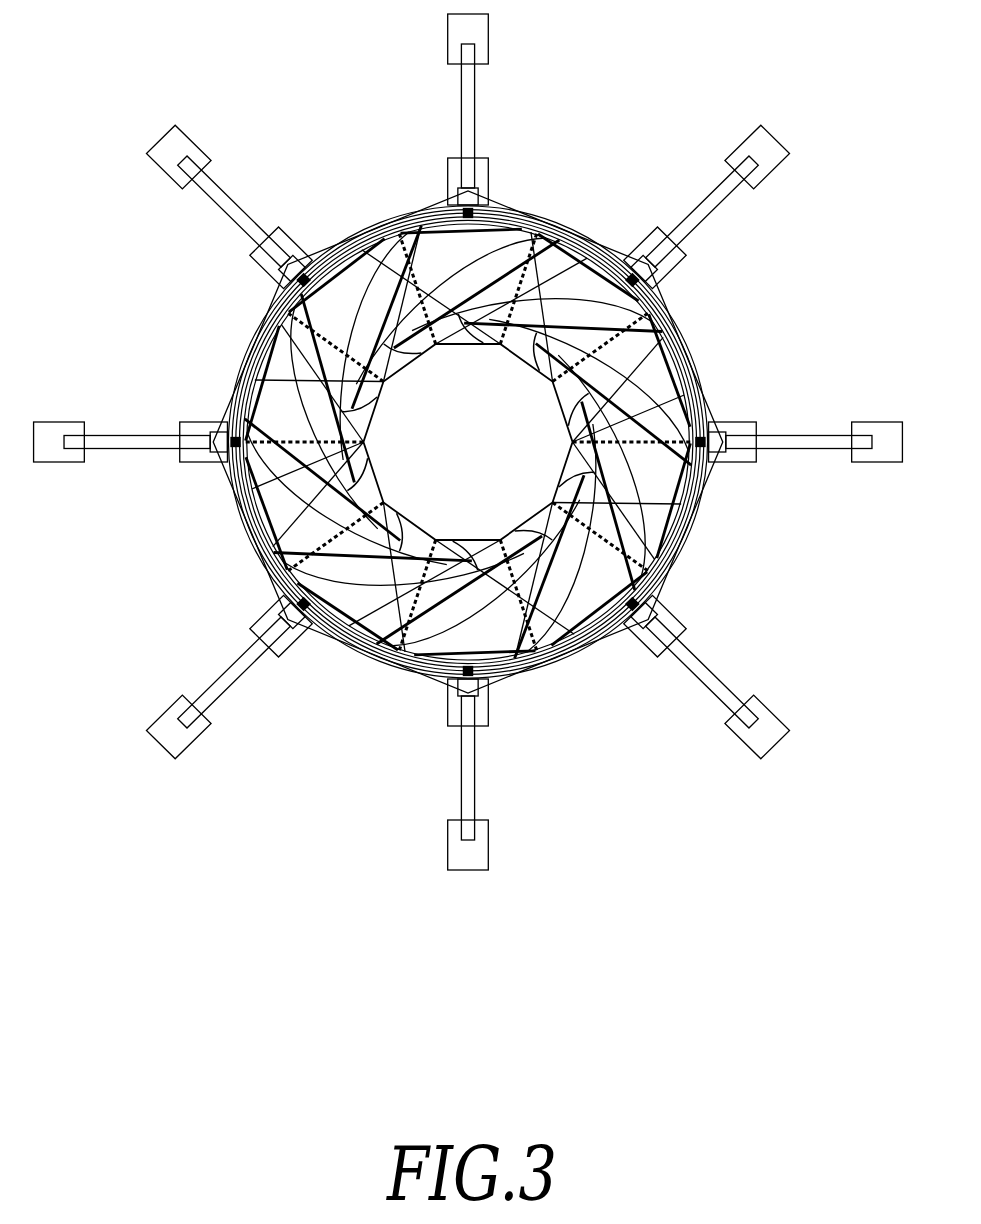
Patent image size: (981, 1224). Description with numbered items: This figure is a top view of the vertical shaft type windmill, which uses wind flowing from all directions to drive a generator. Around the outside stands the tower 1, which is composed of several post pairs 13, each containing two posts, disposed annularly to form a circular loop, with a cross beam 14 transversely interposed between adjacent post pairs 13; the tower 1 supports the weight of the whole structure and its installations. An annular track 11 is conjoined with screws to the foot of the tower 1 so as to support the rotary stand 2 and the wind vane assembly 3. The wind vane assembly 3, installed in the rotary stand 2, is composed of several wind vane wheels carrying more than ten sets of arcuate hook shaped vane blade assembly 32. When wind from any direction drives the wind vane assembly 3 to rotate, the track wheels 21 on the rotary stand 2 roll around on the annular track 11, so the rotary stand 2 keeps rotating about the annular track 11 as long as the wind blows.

The tower 1 is at (675, 256).
The rotary stand 2 is at (662, 348).
The track wheels 21 is at (720, 423).
The wind vane assembly 3 is at (493, 240).
The arcuate hook shaped vane blade assembly 32 is at (553, 267).
The annular track 11 is at (673, 538).
The post pairs 13 is at (237, 455).
The cross beam 14 is at (660, 587).